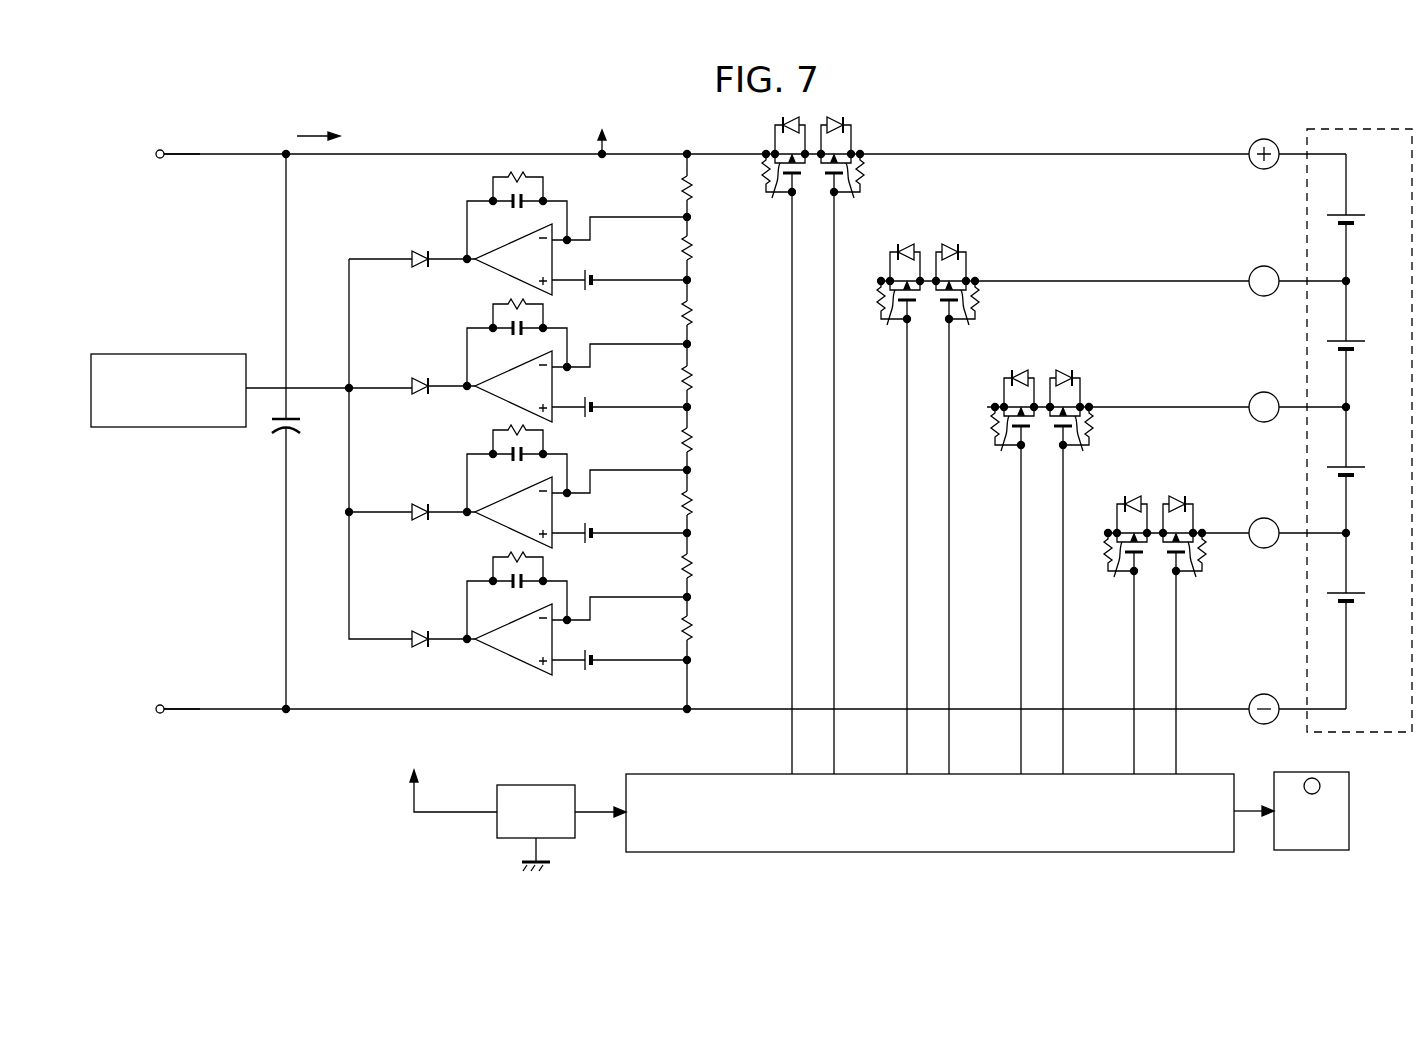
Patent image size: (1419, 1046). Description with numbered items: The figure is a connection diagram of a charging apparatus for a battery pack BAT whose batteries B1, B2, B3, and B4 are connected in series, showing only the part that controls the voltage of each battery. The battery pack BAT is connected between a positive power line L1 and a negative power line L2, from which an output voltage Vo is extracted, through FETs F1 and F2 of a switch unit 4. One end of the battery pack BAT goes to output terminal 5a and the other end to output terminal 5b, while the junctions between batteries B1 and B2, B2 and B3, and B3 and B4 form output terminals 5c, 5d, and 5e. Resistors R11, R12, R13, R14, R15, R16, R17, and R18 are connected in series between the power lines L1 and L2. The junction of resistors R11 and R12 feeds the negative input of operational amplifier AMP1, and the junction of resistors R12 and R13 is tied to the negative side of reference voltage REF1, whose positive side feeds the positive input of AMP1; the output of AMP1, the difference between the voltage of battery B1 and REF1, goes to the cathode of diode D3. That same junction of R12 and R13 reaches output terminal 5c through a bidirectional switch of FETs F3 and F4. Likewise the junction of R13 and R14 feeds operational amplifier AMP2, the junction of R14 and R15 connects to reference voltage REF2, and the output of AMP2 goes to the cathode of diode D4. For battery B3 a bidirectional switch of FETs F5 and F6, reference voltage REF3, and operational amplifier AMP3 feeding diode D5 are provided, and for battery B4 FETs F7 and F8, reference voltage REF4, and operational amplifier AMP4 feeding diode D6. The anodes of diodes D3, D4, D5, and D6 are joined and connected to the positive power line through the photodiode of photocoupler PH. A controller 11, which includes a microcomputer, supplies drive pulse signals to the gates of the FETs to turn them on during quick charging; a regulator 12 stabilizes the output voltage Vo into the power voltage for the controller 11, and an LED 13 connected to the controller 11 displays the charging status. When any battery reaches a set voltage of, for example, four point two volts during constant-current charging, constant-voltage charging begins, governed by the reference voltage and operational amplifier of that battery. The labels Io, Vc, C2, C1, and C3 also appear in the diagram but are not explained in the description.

The switch unit 4 is at (1043, 131).
The output terminal 5a is at (1261, 137).
The output terminal 5b is at (1261, 692).
The output terminal 5c is at (1261, 264).
The output terminal 5d is at (1261, 390).
The output terminal 5e is at (1261, 516).
The controller 11 is at (664, 774).
The regulator 12 is at (516, 785).
The LED 13 is at (1348, 806).
The positive power line L1 is at (208, 152).
The negative power line L2 is at (208, 707).
The output current Io is at (301, 135).
The output voltage Vo is at (603, 130).
The control voltage Vc is at (448, 777).
The capacitor C2 is at (303, 431).
The photocoupler PH is at (168, 390).
The diode D3 is at (440, 246).
The diode D4 is at (440, 373).
The diode D5 is at (440, 499).
The diode D6 is at (440, 626).
The operational amplifier AMP1 is at (516, 233).
The operational amplifier AMP2 is at (516, 360).
The operational amplifier AMP3 is at (516, 486).
The operational amplifier AMP4 is at (516, 613).
The reference voltage REF1 is at (592, 272).
The reference voltage REF2 is at (592, 399).
The reference voltage REF3 is at (592, 525).
The reference voltage REF4 is at (592, 652).
The resistor R11 is at (712, 188).
The resistor R12 is at (712, 248).
The resistor R13 is at (712, 313).
The resistor R14 is at (712, 378).
The resistor R15 is at (712, 440).
The resistor R16 is at (712, 503).
The resistor R17 is at (712, 566).
The resistor R18 is at (712, 628).
The FET F1 is at (772, 198).
The FET F2 is at (854, 198).
The FET F3 is at (887, 325).
The FET F4 is at (969, 325).
The FET F5 is at (1001, 451).
The FET F6 is at (1083, 451).
The FET F7 is at (1114, 577).
The FET F8 is at (1196, 577).
The battery pack BAT is at (1353, 129).
The battery B1 is at (1362, 220).
The battery B2 is at (1362, 331).
The battery B3 is at (1362, 472).
The battery B4 is at (1362, 583).
The intermediate terminal C1 is at (1297, 281).
The intermediate terminal C3 is at (1297, 533).